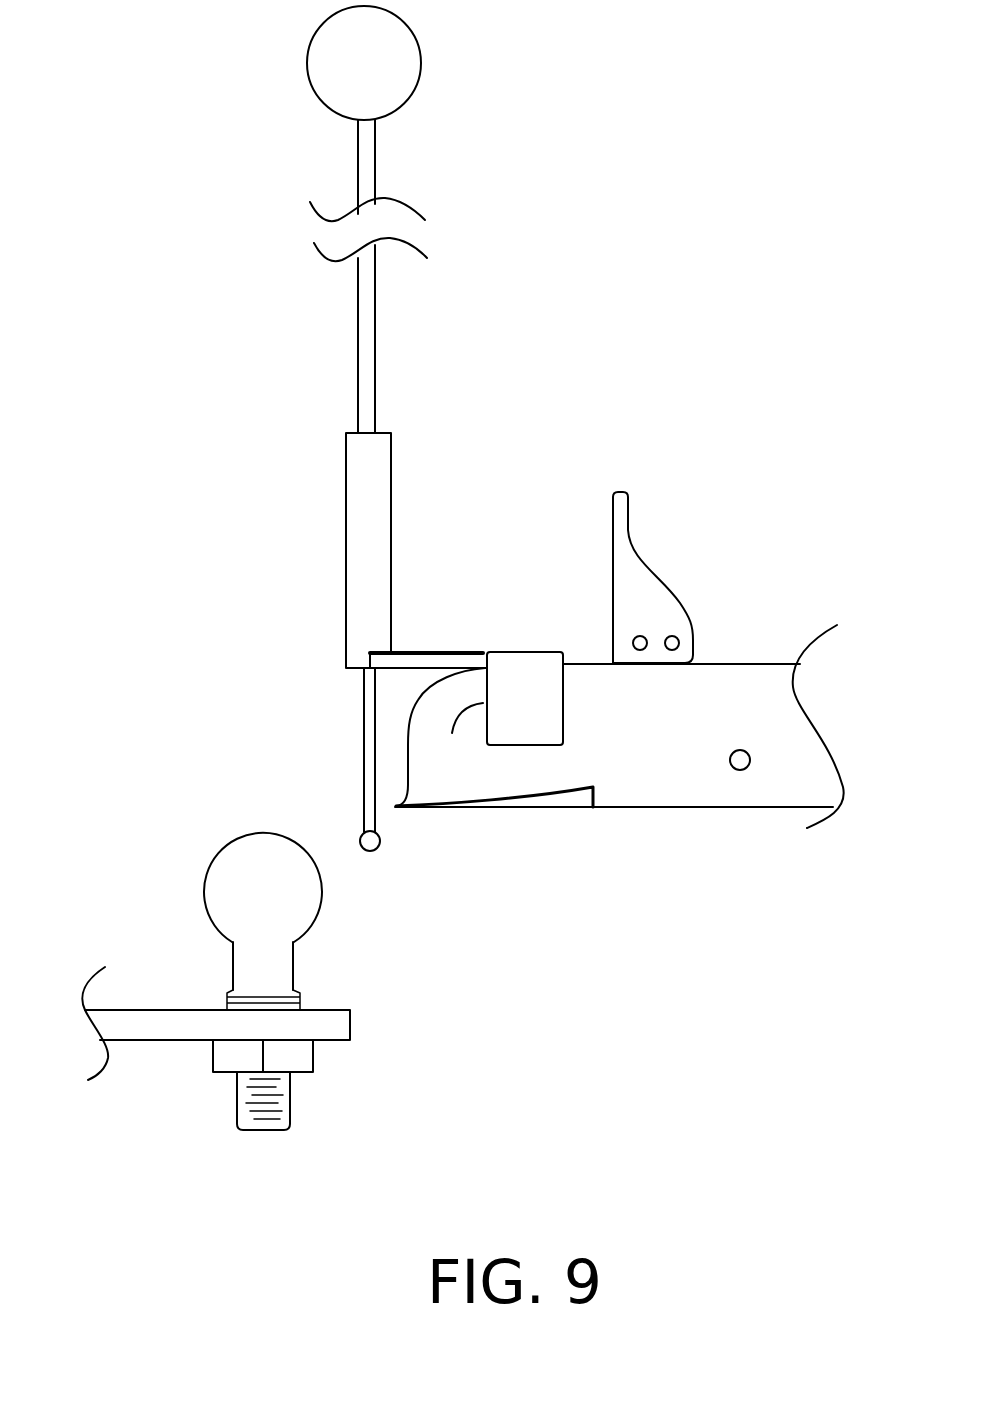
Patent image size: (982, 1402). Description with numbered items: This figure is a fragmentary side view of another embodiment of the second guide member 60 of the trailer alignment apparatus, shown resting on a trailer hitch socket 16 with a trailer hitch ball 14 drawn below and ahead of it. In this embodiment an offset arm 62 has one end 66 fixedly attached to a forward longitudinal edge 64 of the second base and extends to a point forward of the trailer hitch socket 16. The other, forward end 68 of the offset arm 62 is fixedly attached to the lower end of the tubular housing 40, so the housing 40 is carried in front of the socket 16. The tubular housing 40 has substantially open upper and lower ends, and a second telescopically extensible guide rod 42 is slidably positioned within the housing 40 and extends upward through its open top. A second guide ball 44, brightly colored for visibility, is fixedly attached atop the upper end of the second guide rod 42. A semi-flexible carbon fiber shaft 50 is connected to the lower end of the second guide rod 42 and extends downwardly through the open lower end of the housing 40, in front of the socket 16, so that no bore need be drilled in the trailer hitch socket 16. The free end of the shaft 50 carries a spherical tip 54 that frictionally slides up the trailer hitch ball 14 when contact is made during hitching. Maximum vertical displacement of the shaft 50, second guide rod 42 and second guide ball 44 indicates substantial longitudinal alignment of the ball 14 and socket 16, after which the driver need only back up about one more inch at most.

The trailer hitch ball 14 is at (227, 847).
The trailer hitch socket 16 is at (478, 810).
The tubular housing 40 is at (346, 508).
The second telescopically extensible guide rod 42 is at (378, 342).
The second guide ball 44 is at (306, 53).
The semi-flexible shaft 50 is at (365, 733).
The spherical tip 54 is at (380, 853).
The second guide member 60 is at (255, 369).
The offset arm 62 is at (479, 598).
The forward longitudinal edge 64 is at (440, 737).
The end of offset arm 66 is at (482, 653).
The forward end of offset arm 68 is at (413, 650).